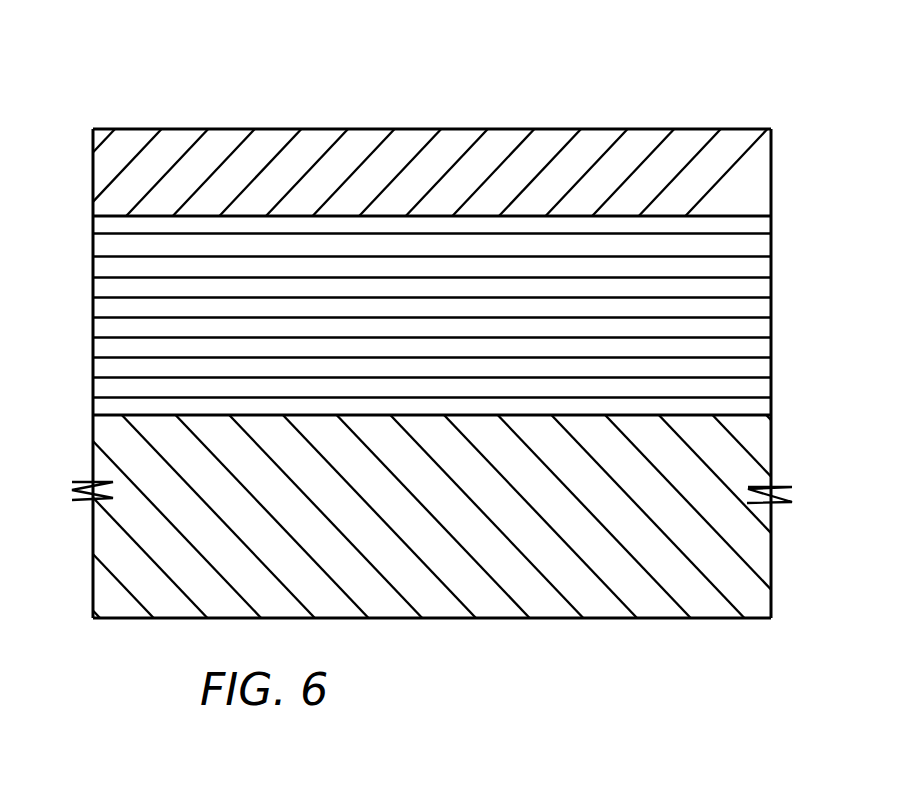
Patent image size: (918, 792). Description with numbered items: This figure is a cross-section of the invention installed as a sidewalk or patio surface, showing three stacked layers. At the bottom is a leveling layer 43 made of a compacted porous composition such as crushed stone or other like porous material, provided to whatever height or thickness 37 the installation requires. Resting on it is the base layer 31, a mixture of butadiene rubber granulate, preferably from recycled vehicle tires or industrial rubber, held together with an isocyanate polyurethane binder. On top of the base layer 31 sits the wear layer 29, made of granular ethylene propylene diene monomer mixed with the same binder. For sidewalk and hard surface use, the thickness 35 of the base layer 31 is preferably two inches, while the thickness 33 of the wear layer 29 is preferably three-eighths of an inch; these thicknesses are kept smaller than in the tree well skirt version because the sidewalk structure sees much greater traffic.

The wear layer 29 is at (487, 129).
The base layer 31 is at (772, 325).
The thickness of wear layer 33 is at (82, 129).
The thickness of base layer 35 is at (82, 216).
The thickness of leveling layer 37 is at (82, 621).
The leveling layer 43 is at (772, 556).